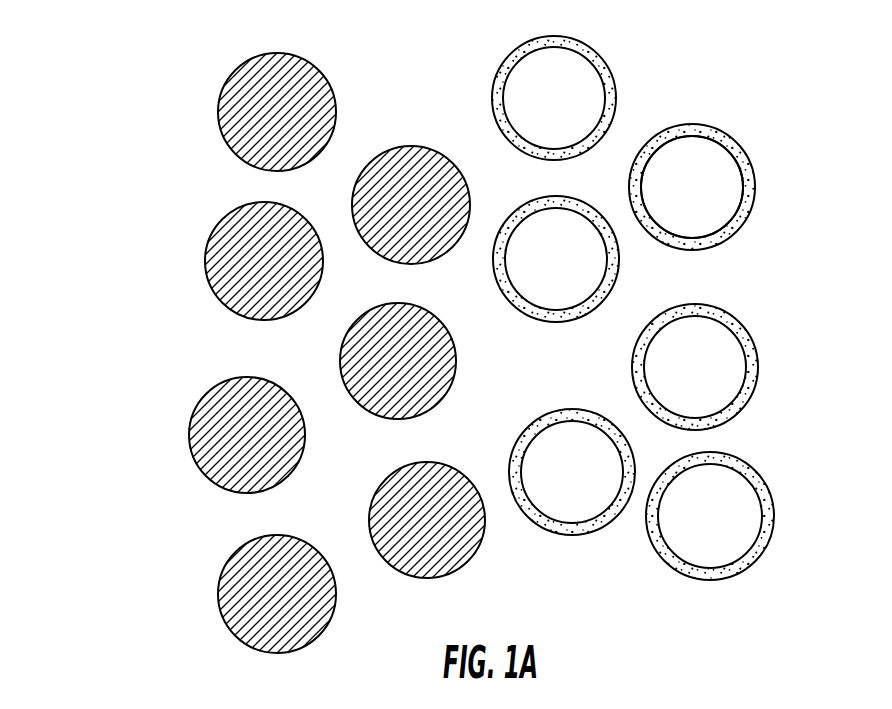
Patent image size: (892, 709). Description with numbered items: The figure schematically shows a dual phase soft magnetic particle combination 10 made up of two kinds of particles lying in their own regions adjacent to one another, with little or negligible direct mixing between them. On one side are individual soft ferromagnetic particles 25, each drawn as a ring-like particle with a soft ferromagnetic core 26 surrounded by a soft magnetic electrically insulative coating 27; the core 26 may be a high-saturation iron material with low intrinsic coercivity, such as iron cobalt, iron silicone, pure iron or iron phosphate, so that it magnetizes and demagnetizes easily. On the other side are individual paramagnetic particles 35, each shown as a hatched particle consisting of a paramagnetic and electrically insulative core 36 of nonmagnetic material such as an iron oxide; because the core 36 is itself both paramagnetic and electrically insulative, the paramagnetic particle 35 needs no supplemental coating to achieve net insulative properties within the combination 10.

The dual phase soft magnetic particle combination 10 is at (122, 113).
The individual soft ferromagnetic particle 25 is at (610, 67).
The soft ferromagnetic core 26 is at (717, 203).
The soft magnetic electrically insulative coating 27 is at (728, 142).
The individual paramagnetic particle 35 is at (327, 77).
The paramagnetic and electrically insulative core 36 is at (228, 262).